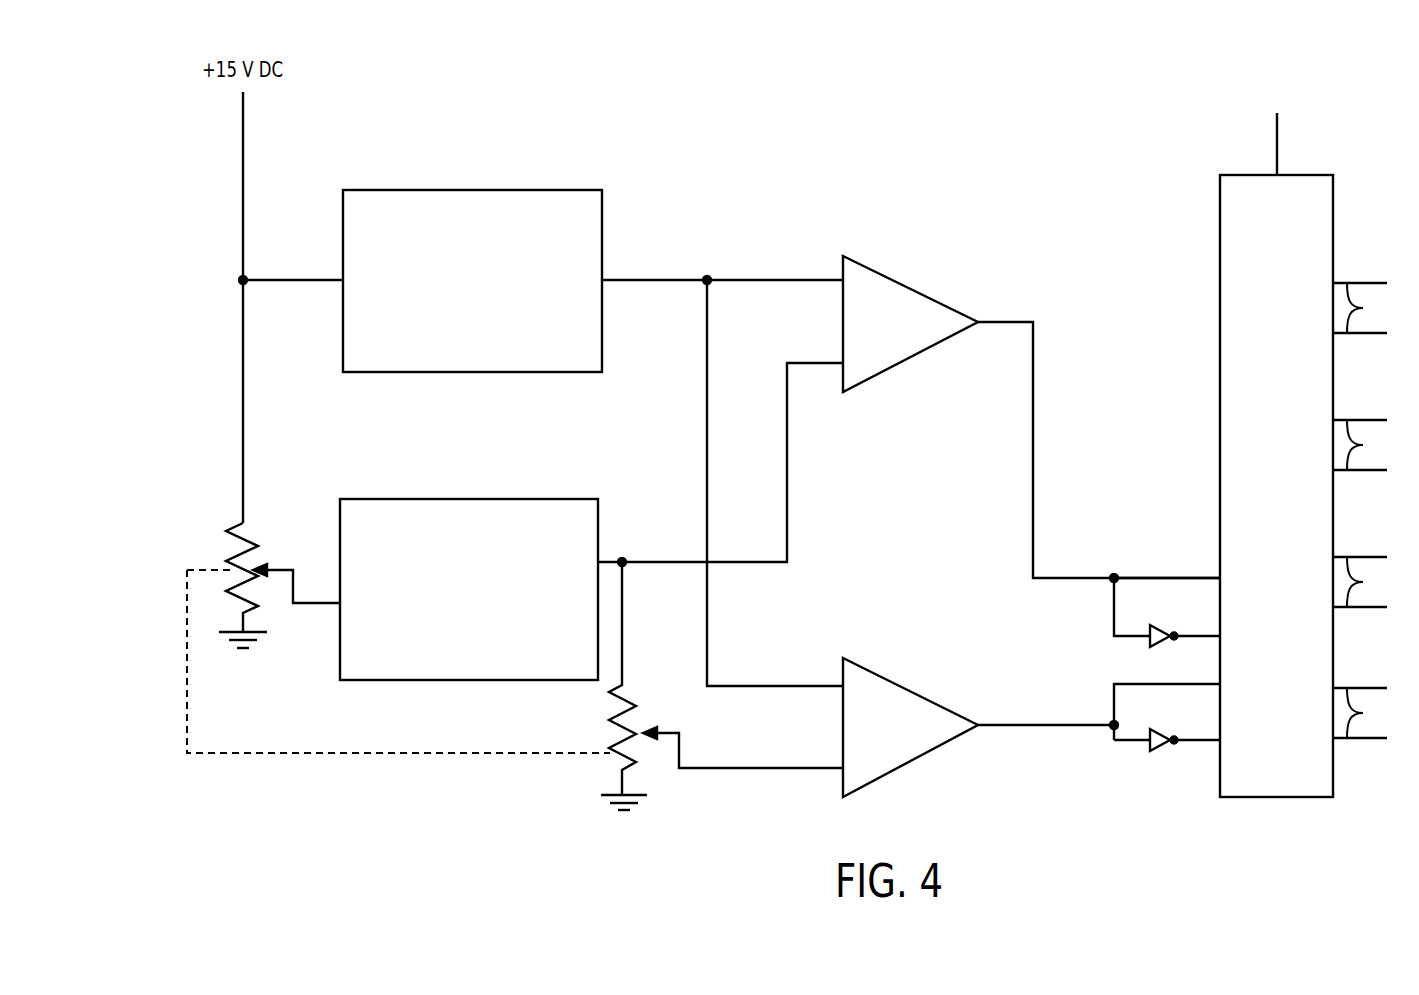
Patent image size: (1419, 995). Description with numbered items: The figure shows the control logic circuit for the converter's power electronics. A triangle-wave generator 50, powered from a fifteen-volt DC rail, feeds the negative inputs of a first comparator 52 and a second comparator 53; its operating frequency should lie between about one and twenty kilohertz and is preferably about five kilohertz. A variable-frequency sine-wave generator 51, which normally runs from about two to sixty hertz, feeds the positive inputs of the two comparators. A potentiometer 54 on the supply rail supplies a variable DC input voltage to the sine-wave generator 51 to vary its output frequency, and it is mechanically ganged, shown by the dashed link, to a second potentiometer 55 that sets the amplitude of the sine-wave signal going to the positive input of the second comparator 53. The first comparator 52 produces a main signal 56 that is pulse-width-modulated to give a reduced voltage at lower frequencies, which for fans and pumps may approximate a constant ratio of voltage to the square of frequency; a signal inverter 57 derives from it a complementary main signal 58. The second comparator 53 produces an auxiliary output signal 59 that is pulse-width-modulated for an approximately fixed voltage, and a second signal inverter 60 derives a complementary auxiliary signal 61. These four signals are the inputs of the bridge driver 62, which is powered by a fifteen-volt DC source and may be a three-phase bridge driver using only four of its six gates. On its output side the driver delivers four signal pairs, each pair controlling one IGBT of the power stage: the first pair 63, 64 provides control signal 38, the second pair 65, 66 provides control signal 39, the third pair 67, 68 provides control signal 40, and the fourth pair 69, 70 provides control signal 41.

The triangle-wave generator 50 is at (458, 338).
The variable-frequency sine-wave generator 51 is at (455, 648).
The first comparator 52 is at (879, 337).
The second comparator 53 is at (881, 742).
The potentiometer 54 is at (226, 548).
The second potentiometer 55 is at (613, 722).
The main signal 56 is at (1147, 578).
The signal inverter 57 is at (1133, 684).
The complementary main signal 58 is at (1203, 636).
The auxiliary output signal 59 is at (1052, 725).
The second signal inverter 60 is at (1160, 752).
The complementary auxiliary signal 61 is at (1210, 746).
The bridge driver 62 is at (1265, 533).
The first pair output signal 63 is at (1373, 558).
The first pair output signal 64 is at (1373, 608).
The second pair output signal 65 is at (1373, 284).
The second pair output signal 66 is at (1373, 334).
The third pair output signal 67 is at (1373, 689).
The third pair output signal 68 is at (1373, 739).
The fourth pair output signal 69 is at (1373, 421).
The fourth pair output signal 70 is at (1373, 471).
The control signal 38 is at (1367, 582).
The control signal 39 is at (1367, 308).
The control signal 40 is at (1367, 713).
The control signal 41 is at (1367, 445).